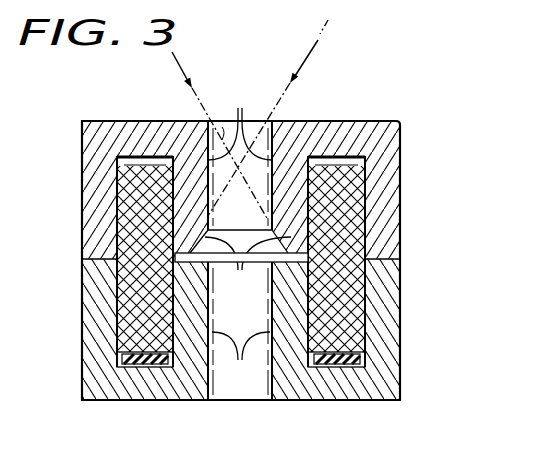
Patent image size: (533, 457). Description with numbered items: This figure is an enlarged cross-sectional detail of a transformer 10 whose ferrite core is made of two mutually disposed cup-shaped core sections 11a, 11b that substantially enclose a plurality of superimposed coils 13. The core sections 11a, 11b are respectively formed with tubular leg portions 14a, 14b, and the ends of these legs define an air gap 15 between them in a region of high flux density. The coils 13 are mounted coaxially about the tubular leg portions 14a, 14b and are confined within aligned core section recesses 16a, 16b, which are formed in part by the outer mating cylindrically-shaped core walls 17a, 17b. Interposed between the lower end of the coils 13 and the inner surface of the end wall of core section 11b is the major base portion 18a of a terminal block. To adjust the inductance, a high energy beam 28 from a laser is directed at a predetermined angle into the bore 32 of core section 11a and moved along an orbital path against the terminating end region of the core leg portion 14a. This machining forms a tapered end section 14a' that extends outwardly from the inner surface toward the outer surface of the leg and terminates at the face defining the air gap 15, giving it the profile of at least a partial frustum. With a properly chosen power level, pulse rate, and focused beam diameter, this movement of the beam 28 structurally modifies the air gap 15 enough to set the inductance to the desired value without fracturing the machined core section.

The transformer 10 is at (340, 110).
The core section 11a is at (406, 148).
The core section 11b is at (407, 300).
The coils 13 is at (118, 252).
The tubular leg portion 14a is at (241, 244).
The tapered end section 14a' is at (240, 262).
The tubular leg portion 14b is at (240, 331).
The air gap 15 is at (292, 257).
The core section recess 16a is at (118, 163).
The core section recess 16b is at (122, 366).
The outer core wall 17a is at (88, 210).
The outer core wall 17b is at (88, 318).
The major base portion 18a is at (155, 365).
The high energy beam 28 is at (190, 89).
The bore 32 is at (222, 126).